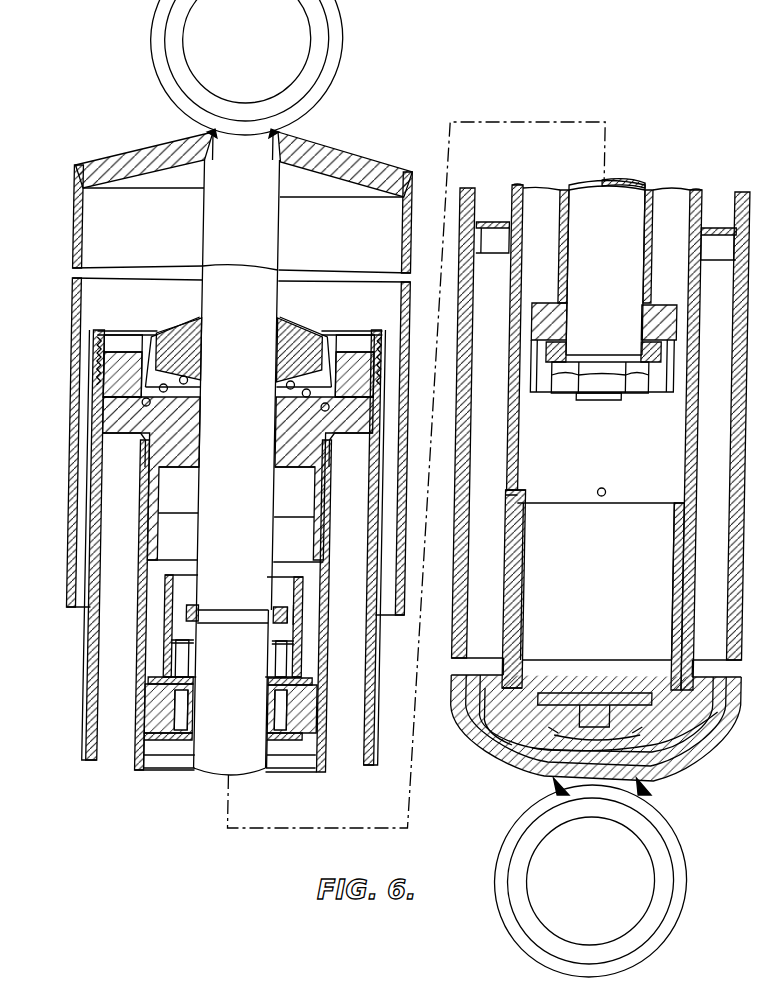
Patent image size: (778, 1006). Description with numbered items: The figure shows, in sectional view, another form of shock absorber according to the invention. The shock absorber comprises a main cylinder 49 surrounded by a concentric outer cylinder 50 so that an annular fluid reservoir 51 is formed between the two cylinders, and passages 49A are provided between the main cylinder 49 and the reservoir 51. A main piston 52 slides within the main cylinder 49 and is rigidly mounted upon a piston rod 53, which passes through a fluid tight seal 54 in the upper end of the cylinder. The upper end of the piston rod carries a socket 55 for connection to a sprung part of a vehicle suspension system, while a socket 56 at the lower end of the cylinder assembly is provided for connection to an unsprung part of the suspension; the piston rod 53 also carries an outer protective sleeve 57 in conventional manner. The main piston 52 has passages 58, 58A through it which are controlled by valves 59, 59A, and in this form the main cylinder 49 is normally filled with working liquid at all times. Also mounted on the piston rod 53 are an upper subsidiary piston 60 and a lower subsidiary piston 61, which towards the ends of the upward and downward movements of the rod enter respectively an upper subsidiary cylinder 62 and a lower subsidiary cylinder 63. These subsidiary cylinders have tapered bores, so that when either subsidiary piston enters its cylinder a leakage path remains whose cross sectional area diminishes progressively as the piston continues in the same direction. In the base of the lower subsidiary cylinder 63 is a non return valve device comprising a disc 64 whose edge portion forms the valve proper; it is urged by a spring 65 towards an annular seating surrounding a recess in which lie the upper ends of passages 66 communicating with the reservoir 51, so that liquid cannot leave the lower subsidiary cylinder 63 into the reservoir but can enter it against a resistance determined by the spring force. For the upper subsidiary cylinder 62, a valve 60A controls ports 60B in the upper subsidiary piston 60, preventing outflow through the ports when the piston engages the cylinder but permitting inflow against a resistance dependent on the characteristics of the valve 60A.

The main cylinder 49 is at (320, 757).
The passages 49A is at (515, 493).
The outer cylinder 50 is at (458, 632).
The annular fluid reservoir 51 is at (121, 747).
The main piston 52 is at (300, 713).
The piston rod 53 is at (218, 223).
The fluid tight seal 54 is at (293, 340).
The socket 55 is at (318, 80).
The socket 56 is at (498, 870).
The outer protective sleeve 57 is at (408, 208).
The passage 58 is at (287, 703).
The passage 58A is at (160, 727).
The valve 59 is at (300, 723).
The valve 59A is at (160, 680).
The upper subsidiary piston 60 is at (170, 658).
The valve 60A is at (273, 617).
The ports 60B is at (290, 648).
The lower subsidiary piston 61 is at (658, 320).
The upper subsidiary cylinder 62 is at (313, 528).
The lower subsidiary cylinder 63 is at (677, 537).
The disc 64 is at (567, 700).
The spring 65 is at (633, 747).
The passages 66 is at (492, 717).